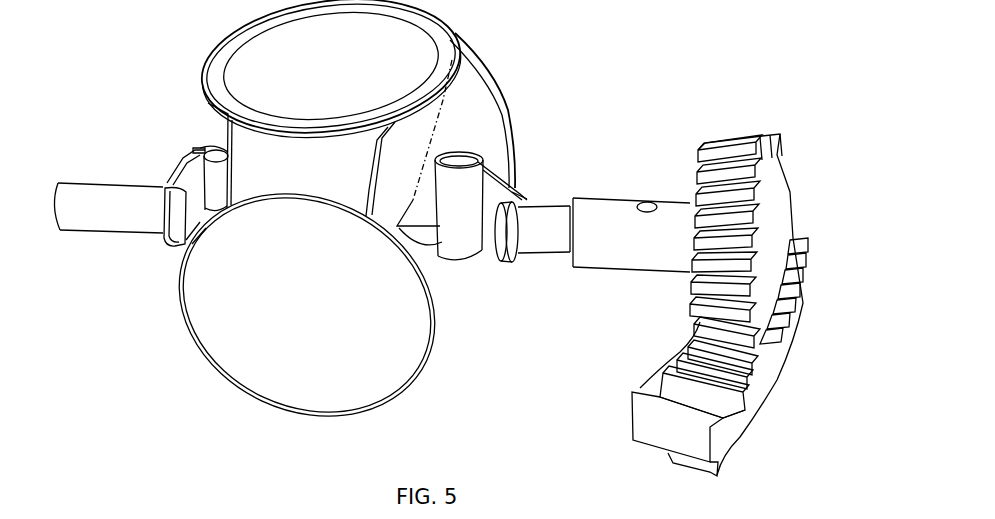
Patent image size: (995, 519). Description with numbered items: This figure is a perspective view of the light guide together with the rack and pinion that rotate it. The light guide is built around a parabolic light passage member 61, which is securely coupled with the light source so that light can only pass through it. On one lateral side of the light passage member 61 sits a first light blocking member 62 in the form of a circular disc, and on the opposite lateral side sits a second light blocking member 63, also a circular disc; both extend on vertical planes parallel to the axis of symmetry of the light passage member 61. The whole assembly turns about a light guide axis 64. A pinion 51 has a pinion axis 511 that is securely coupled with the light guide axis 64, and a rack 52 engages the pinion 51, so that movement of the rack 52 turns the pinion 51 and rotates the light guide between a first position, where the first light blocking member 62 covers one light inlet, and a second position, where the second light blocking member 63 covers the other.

The light passage member 61 is at (415, 108).
The first light blocking member 62 is at (490, 95).
The second light blocking member 63 is at (213, 278).
The light guide axis 64 is at (538, 198).
The pinion axis 511 is at (603, 190).
The pinion 51 is at (770, 163).
The rack 52 is at (760, 358).